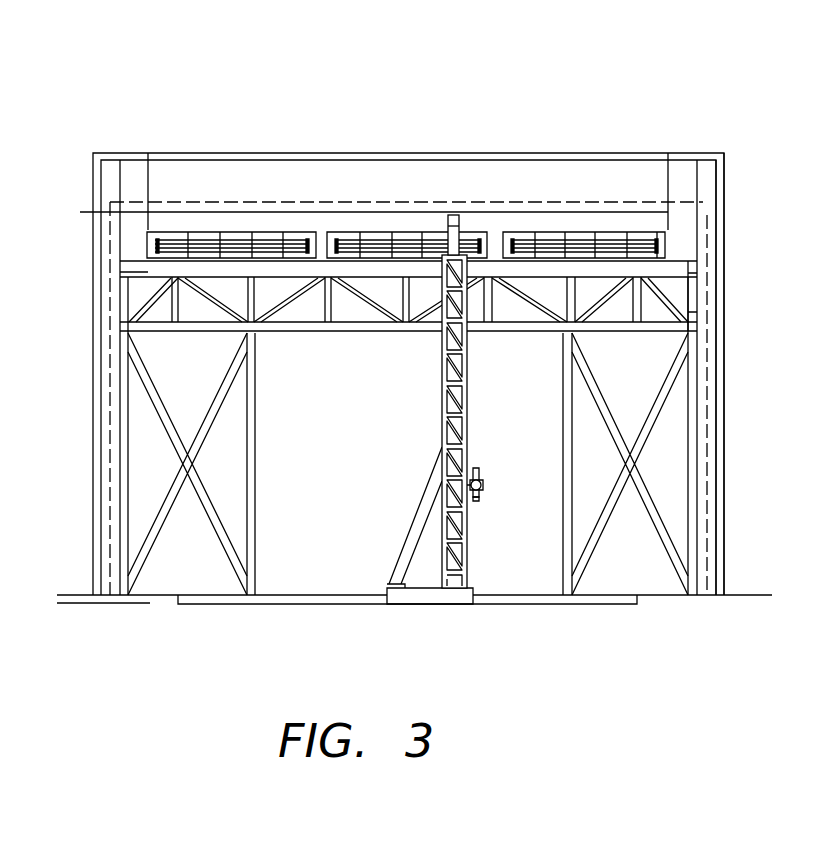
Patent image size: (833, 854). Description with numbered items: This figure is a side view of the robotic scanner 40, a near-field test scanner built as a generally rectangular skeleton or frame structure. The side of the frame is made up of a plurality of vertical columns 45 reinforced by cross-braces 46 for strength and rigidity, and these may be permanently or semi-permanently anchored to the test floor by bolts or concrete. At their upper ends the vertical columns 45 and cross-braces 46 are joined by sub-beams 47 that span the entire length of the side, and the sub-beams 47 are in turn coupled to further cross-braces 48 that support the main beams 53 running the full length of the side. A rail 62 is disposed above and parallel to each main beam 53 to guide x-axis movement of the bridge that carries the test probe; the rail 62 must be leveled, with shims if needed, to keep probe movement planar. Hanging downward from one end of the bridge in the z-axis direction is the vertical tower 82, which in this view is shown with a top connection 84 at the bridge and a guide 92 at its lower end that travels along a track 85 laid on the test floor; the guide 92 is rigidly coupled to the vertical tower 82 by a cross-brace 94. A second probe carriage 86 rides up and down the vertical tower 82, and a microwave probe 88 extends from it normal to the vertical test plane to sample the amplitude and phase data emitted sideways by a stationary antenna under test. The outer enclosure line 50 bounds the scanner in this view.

The robotic scanner 40 is at (203, 126).
The vertical columns 45 is at (125, 430).
The cross-braces 46 is at (163, 493).
The sub-beams 47 is at (450, 297).
The cross-braces 48 is at (606, 308).
The enclosure wall 50 is at (707, 566).
The main beams 53 is at (676, 268).
The rail 62 is at (580, 232).
The vertical tower 82 is at (440, 382).
The mast top guide 84 is at (458, 228).
The track 85 is at (300, 606).
The second probe carriage 86 is at (483, 485).
The microwave probe 88 is at (481, 499).
The guide 92 is at (422, 604).
The cross-brace 94 is at (410, 538).